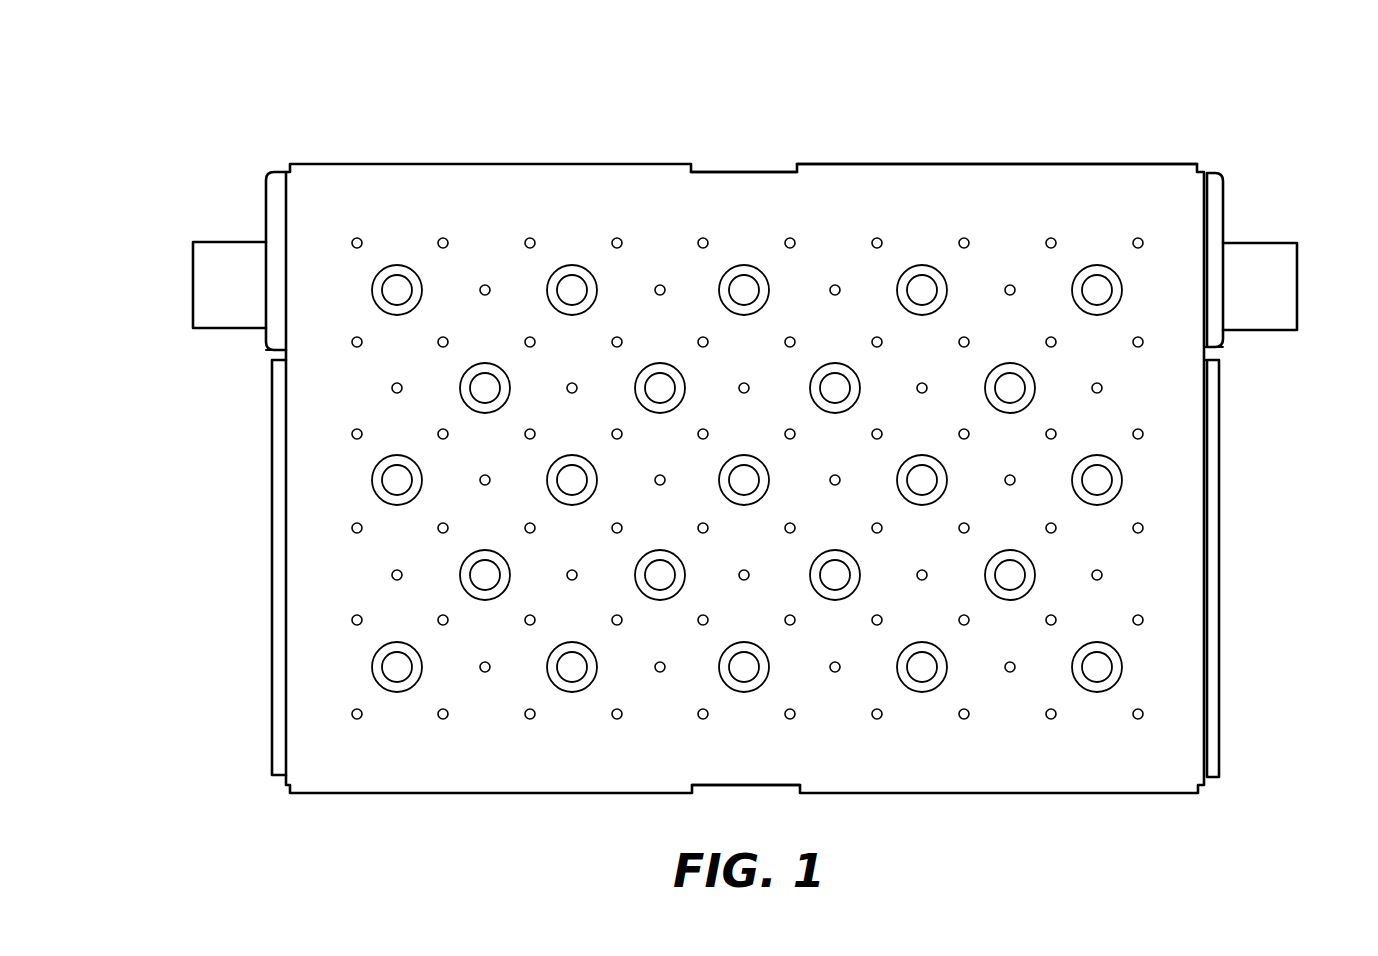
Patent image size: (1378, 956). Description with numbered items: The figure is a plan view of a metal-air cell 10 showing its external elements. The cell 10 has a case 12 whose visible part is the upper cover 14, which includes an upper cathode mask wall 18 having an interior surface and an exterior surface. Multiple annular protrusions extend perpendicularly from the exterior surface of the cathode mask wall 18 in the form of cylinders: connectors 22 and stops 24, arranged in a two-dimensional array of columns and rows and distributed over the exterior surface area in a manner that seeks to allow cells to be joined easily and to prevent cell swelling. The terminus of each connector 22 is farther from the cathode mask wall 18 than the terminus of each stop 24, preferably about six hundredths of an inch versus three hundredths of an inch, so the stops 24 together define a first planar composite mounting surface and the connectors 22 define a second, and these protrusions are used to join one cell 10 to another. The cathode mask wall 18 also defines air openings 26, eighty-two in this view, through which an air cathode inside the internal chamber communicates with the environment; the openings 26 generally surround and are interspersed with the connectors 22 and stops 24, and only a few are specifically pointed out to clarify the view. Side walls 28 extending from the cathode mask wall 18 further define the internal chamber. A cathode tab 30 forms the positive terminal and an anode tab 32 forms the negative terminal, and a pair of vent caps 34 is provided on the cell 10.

The metal-air cell 10 is at (358, 115).
The case 12 is at (519, 164).
The upper cover 14 is at (835, 165).
The upper cathode mask wall 18 is at (998, 223).
The connectors 22 is at (378, 301).
The stops 24 is at (572, 265).
The air openings 26 is at (480, 290).
The side walls 28 is at (715, 172).
The cathode tab 30 is at (1297, 281).
The anode tab 32 is at (193, 278).
The vent caps 34 is at (272, 656).